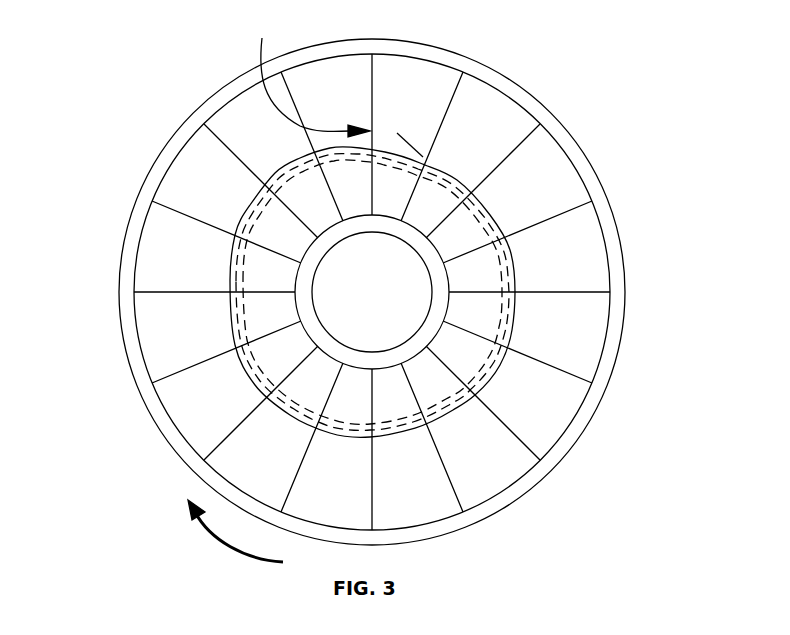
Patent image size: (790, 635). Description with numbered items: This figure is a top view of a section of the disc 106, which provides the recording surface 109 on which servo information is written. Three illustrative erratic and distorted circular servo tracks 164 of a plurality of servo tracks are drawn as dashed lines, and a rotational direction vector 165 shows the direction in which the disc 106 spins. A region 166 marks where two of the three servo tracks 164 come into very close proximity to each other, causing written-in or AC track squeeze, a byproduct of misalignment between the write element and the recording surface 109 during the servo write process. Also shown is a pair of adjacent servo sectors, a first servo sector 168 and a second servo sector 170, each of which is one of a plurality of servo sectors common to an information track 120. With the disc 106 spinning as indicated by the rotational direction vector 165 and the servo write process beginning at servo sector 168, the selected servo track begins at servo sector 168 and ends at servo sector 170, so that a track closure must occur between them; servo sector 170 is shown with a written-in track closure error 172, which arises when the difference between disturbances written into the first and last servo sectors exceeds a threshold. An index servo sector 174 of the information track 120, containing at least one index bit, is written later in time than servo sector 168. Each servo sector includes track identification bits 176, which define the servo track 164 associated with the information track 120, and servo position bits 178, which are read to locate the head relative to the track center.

The disc 106 is at (547, 82).
The recording surface 109 is at (525, 478).
The information track 120 is at (228, 265).
The servo tracks 164 is at (400, 150).
The rotational direction vector 165 is at (217, 545).
The region 166 is at (488, 264).
The first servo sector 168 is at (312, 162).
The second servo sector 170 is at (374, 128).
The written-in track closure error 172 is at (303, 74).
The index servo sector 174 is at (517, 348).
The track identification bits 176 is at (514, 434).
The servo position bits 178 is at (217, 427).